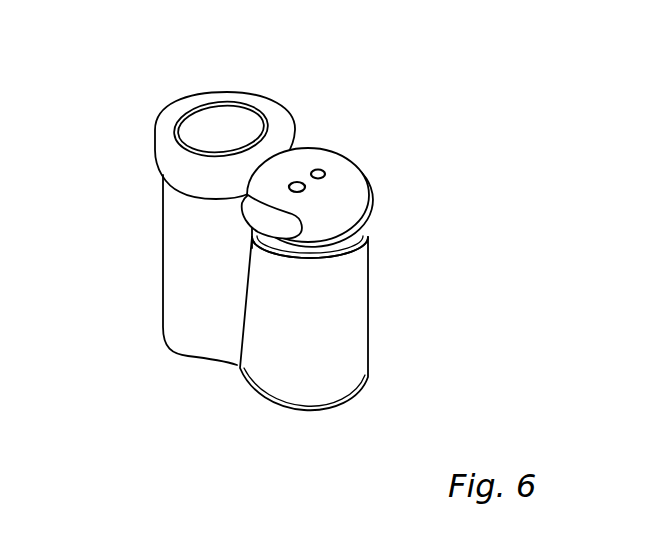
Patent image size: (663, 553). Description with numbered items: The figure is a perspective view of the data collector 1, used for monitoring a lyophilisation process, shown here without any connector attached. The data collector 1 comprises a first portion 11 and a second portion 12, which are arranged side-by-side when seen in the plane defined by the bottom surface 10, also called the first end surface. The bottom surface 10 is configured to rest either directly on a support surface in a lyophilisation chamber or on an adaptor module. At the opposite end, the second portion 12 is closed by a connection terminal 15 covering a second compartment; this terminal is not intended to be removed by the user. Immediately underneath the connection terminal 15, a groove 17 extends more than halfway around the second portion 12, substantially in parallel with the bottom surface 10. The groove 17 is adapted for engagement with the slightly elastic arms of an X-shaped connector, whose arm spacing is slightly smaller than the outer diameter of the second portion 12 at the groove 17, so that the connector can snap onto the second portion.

The data collector 1 is at (258, 248).
The bottom surface 10 is at (222, 367).
The first portion 11 is at (163, 275).
The second portion 12 is at (348, 302).
The connection terminal 15 is at (308, 157).
The groove 17 is at (353, 243).